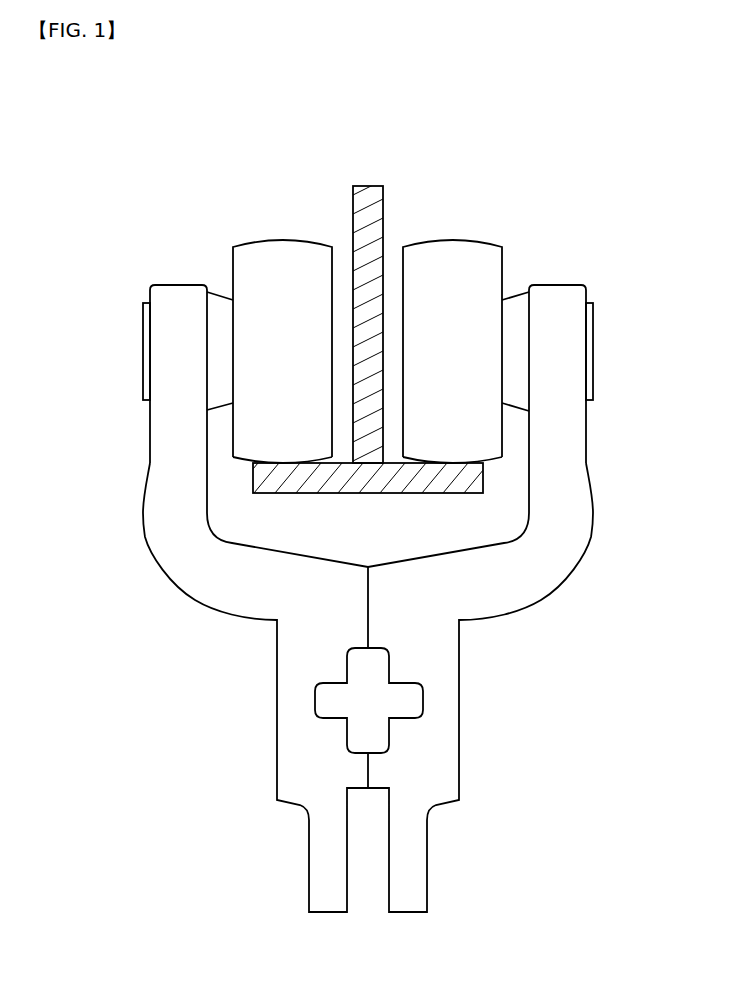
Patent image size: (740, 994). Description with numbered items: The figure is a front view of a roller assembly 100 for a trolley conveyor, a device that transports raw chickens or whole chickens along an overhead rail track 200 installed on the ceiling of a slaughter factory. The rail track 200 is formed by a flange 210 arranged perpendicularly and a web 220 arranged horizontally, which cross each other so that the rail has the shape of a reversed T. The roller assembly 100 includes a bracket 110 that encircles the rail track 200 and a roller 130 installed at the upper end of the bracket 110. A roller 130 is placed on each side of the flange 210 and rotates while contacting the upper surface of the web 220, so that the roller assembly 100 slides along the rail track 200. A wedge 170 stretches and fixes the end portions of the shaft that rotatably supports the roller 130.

The roller assembly 100 is at (158, 570).
The bracket 110 is at (148, 422).
The roller 130 is at (285, 240).
The wedge 170 is at (146, 360).
The rail track 200 is at (448, 291).
The flange 210 is at (384, 210).
The web 220 is at (484, 480).